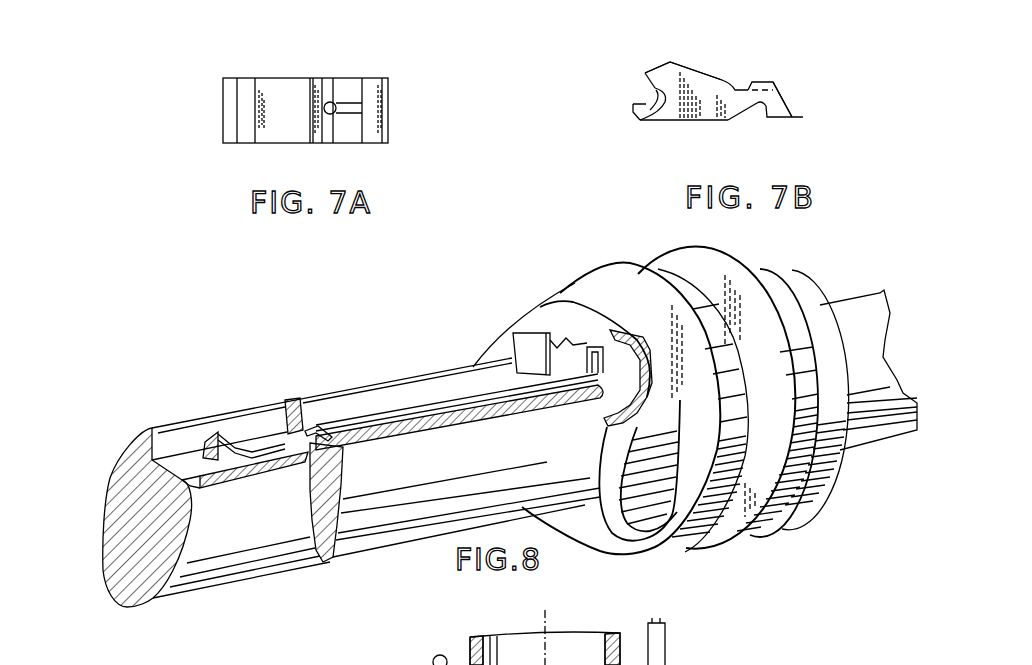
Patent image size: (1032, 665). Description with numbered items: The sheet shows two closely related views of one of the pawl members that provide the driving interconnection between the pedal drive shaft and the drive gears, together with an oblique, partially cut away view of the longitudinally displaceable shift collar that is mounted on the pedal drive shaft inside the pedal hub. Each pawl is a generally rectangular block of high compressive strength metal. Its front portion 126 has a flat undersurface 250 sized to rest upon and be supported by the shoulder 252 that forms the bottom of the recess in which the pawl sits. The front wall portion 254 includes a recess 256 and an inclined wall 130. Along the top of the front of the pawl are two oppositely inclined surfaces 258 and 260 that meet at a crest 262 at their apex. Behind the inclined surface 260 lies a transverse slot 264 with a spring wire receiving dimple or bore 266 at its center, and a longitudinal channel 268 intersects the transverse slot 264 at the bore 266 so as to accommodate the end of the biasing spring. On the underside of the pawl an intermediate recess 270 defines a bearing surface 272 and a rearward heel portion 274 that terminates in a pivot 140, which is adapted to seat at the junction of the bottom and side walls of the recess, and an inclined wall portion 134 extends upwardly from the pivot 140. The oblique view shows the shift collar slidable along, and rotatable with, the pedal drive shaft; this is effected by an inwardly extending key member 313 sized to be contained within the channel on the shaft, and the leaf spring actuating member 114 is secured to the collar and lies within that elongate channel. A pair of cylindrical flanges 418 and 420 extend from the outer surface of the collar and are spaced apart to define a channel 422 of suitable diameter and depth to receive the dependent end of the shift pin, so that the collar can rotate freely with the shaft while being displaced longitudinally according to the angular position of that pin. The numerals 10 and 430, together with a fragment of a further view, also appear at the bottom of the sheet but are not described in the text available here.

In FIG. 7A, the front portion 126 is at (240, 56).
In FIG. 7A, the shoulder 252 is at (245, 85).
In FIG. 7A, the front wall portion 254 is at (223, 132).
In FIG. 7B, the front wall portion 254 is at (633, 117).
In FIG. 7A, the recess 256 is at (228, 98).
In FIG. 7B, the recess 256 is at (650, 97).
In FIG. 7B, the inclined surface 258 is at (660, 62).
In FIG. 7A, the inclined surface 260 is at (300, 93).
In FIG. 7B, the inclined surface 260 is at (713, 72).
In FIG. 7A, the crest 262 is at (258, 92).
In FIG. 7B, the crest 262 is at (670, 62).
In FIG. 7A, the transverse slot 264 is at (322, 123).
In FIG. 7B, the transverse slot 264 is at (738, 88).
In FIG. 7A, the bore 266 is at (335, 113).
In FIG. 7A, the longitudinal channel 268 is at (343, 100).
In FIG. 7A, the inclined wall portion 134 is at (378, 97).
In FIG. 7B, the inclined wall portion 134 is at (790, 90).
In FIG. 7A, the pivot 140 is at (388, 118).
In FIG. 7B, the pivot 140 is at (803, 117).
In FIG. 7B, the inclined wall 130 is at (640, 120).
In FIG. 7B, the flat undersurface 250 is at (670, 122).
In FIG. 7B, the intermediate recess 270 is at (760, 110).
In FIG. 7B, the bearing surface 272 is at (728, 122).
In FIG. 7B, the rearward heel portion 274 is at (798, 118).
In FIG. 8, the leaf spring actuating member 114 is at (255, 442).
In FIG. 8, the key member 313 is at (523, 350).
In FIG. 8, the cylindrical flange 418 is at (683, 541).
In FIG. 8, the cylindrical flange 420 is at (750, 523).
In FIG. 8, the channel 422 is at (747, 377).
In FIG. 8, the probe assembly 10 is at (545, 610).
In FIG. 8, the post 430 is at (663, 662).